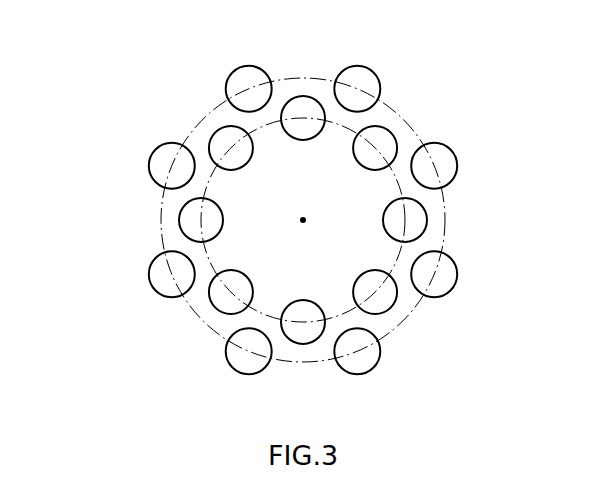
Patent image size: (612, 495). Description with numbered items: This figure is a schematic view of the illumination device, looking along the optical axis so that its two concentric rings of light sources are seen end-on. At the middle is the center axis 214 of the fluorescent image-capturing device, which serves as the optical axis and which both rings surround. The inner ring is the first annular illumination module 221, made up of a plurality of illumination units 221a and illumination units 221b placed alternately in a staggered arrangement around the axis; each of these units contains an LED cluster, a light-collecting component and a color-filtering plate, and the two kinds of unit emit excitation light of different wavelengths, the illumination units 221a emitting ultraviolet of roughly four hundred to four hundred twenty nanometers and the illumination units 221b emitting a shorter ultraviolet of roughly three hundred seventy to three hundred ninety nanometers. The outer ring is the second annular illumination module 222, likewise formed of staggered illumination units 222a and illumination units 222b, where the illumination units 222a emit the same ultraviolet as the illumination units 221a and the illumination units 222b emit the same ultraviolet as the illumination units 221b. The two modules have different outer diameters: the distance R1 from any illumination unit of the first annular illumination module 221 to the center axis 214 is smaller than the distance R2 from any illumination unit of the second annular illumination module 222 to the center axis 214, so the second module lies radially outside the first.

The center axis 214 is at (303, 221).
The first annular illumination module 221 is at (68, 247).
The illumination unit 221a is at (422, 223).
The illumination unit 221b is at (307, 102).
The second annular illumination module 222 is at (524, 42).
The illumination unit 222a is at (246, 73).
The illumination unit 222b is at (443, 153).
The distance R1 is at (303, 126).
The distance R2 is at (352, 101).